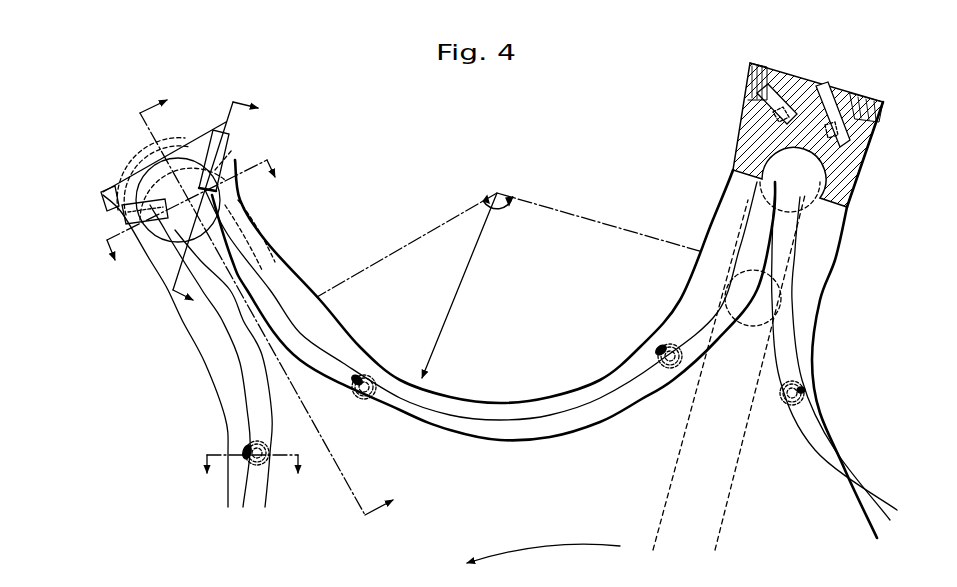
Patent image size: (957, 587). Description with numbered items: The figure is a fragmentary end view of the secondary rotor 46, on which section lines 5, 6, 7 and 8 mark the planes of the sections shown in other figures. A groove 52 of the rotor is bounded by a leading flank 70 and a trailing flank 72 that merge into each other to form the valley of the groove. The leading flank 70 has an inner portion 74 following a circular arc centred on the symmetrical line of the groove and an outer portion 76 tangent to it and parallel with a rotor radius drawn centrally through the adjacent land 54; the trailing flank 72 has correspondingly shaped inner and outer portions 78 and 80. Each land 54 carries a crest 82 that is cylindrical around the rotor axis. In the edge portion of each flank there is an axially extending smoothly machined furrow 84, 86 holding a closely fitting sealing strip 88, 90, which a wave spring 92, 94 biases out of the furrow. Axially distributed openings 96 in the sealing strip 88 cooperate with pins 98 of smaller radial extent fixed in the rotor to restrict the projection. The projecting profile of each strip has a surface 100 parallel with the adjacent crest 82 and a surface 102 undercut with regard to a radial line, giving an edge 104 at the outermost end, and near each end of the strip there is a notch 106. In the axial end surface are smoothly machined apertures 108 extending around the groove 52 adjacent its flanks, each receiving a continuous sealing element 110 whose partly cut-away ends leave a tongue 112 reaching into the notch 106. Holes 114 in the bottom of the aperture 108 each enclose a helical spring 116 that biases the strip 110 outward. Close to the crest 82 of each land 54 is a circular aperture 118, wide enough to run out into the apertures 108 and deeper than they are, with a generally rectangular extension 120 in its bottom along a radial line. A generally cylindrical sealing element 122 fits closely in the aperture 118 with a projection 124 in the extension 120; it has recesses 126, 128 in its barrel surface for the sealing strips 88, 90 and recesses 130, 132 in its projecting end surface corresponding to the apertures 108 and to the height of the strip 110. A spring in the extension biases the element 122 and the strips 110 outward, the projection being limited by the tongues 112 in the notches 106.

The section line 5- 5 is at (252, 479).
The section line 6- 6 is at (200, 225).
The section line 7- 7 is at (224, 211).
The section line 8- 8 is at (274, 300).
The secondary rotor 46 is at (543, 514).
The groove 52 is at (510, 285).
The land 54 is at (704, 282).
The leading flank 70 is at (307, 292).
The trailing flank 72 is at (204, 362).
The inner portion 74 is at (344, 338).
The outer portion 76 is at (308, 220).
The inner portion 78 is at (581, 388).
The outer portion 80 is at (733, 170).
The crest 82 is at (780, 72).
The furrow 84 is at (858, 165).
The furrow 86 is at (772, 115).
The sealing strip 88 is at (878, 104).
The sealing strip 90 is at (748, 66).
The wave spring 92 is at (850, 200).
The wave spring 94 is at (752, 108).
The openings 96 is at (875, 118).
The pins 98 is at (858, 124).
The surface 100 is at (222, 130).
The surface 102 is at (238, 138).
The edge 104 is at (228, 130).
The notch 106 is at (183, 158).
The apertures 108 is at (432, 408).
The sealing element 110 is at (250, 390).
The tongue 112 is at (126, 222).
The holes 114 is at (246, 452).
The helical spring 116 is at (264, 446).
The aperture 118 is at (253, 270).
The extension 120 is at (261, 273).
The sealing element 122 is at (143, 138).
The projection 124 is at (154, 162).
The recess 126 is at (253, 204).
The recess 128 is at (121, 208).
The recess 130 is at (280, 251).
The recess 132 is at (168, 296).